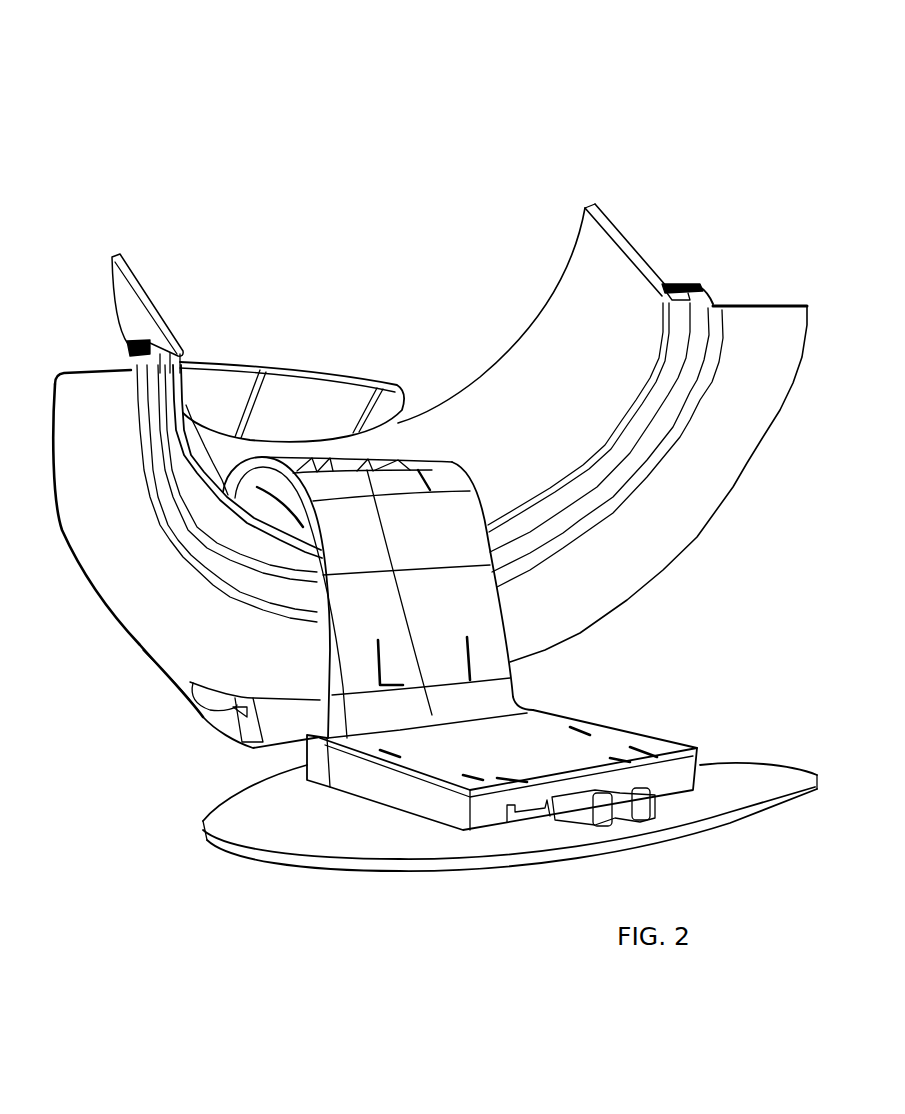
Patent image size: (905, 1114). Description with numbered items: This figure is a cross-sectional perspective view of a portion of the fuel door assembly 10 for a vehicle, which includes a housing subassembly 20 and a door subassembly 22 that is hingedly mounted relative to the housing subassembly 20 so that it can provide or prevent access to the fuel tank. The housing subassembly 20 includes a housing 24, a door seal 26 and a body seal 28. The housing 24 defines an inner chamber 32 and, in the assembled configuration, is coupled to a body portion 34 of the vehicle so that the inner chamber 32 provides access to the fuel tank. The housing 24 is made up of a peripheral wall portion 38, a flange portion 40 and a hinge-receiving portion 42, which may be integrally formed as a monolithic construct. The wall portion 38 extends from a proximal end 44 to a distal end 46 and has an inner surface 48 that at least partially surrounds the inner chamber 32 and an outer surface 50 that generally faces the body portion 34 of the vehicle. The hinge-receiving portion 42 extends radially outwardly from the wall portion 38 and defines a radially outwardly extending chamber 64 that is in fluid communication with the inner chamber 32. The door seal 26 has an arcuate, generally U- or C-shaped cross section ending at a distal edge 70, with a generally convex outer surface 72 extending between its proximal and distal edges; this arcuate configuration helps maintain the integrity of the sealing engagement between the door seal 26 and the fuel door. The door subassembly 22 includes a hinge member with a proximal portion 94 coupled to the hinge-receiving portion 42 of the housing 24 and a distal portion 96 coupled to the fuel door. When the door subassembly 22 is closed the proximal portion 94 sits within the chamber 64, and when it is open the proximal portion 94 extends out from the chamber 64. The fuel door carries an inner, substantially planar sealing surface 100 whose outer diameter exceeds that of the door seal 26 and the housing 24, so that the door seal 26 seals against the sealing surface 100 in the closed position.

The fuel door assembly 10 is at (140, 101).
The housing subassembly 20 is at (108, 304).
The door subassembly 22 is at (236, 865).
The housing 24 is at (627, 240).
The door seal 26 is at (667, 355).
The body seal 28 is at (703, 307).
The inner chamber 32 is at (205, 501).
The body portion 34 is at (103, 567).
The wall portion 38 is at (563, 313).
The flange portion 40 is at (667, 282).
The hinge-receiving portion 42 is at (204, 719).
The proximal end 44 is at (588, 200).
The distal end 46 is at (663, 315).
The inner surface 48 is at (529, 422).
The outer surface 50 is at (151, 342).
The radially outwardly extending chamber 64 is at (292, 402).
The distal edge 70 is at (710, 290).
The convex outer surface 72 is at (641, 413).
The proximal portion 94 is at (310, 530).
The distal portion 96 is at (387, 792).
The sealing surface 100 is at (510, 811).